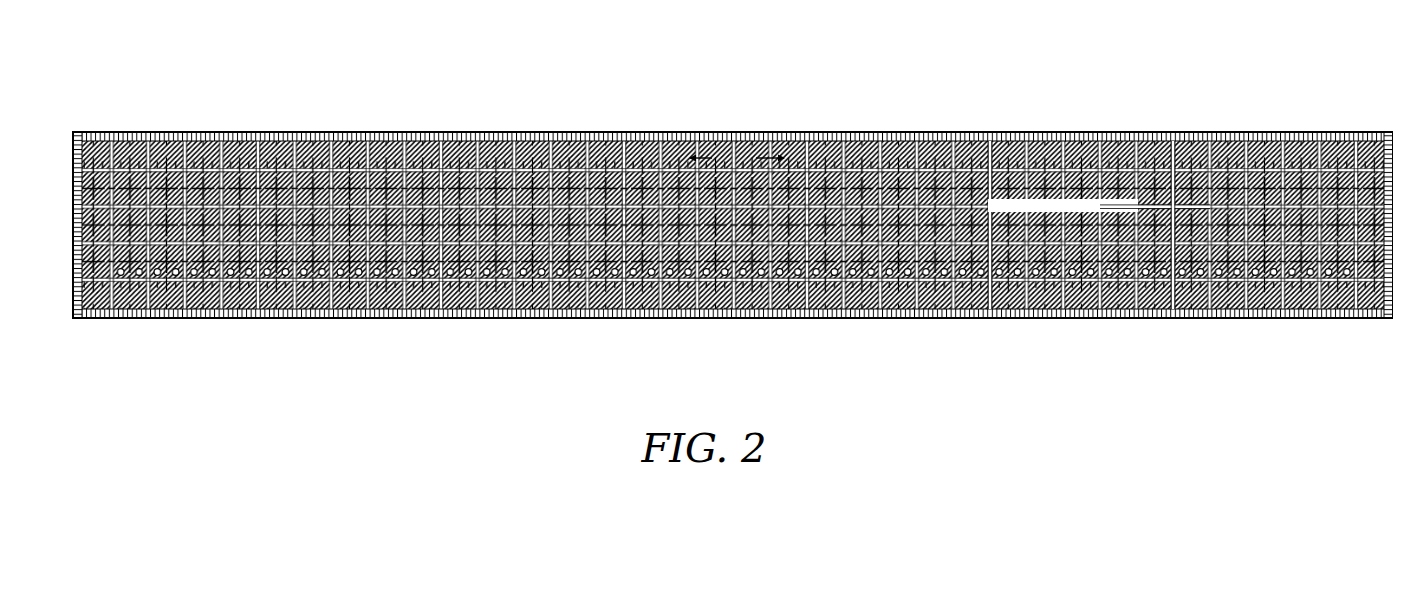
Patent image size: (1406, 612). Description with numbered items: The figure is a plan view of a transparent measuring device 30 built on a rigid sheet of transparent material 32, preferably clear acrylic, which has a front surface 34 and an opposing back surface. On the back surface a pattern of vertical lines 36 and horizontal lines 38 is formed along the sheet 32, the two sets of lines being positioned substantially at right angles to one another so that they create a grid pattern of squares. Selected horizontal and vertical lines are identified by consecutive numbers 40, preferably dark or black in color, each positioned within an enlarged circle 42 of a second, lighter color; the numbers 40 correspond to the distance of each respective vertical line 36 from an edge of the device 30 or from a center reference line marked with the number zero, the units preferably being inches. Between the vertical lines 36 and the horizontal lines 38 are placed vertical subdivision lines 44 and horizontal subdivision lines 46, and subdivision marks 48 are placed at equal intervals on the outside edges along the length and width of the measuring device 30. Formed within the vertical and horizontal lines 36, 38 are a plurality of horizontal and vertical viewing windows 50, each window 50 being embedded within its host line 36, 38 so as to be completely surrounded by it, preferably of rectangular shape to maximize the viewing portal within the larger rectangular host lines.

The transparent measuring device 30 is at (630, 80).
The rigid sheet of transparent material 32 is at (236, 131).
The front surface 34 is at (355, 140).
The vertical lines 36 is at (1032, 180).
The horizontal lines 38 is at (996, 168).
The numbers 40 is at (815, 150).
The enlarged circle 42 is at (822, 162).
The vertical subdivision lines 44 is at (1115, 188).
The horizontal subdivision lines 46 is at (1160, 160).
The subdivision marks 48 is at (1250, 132).
The viewing windows 50 is at (853, 258).